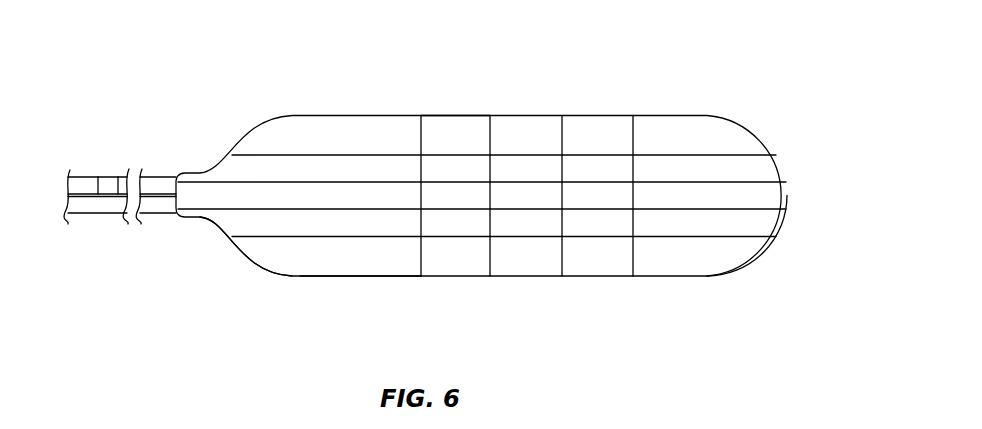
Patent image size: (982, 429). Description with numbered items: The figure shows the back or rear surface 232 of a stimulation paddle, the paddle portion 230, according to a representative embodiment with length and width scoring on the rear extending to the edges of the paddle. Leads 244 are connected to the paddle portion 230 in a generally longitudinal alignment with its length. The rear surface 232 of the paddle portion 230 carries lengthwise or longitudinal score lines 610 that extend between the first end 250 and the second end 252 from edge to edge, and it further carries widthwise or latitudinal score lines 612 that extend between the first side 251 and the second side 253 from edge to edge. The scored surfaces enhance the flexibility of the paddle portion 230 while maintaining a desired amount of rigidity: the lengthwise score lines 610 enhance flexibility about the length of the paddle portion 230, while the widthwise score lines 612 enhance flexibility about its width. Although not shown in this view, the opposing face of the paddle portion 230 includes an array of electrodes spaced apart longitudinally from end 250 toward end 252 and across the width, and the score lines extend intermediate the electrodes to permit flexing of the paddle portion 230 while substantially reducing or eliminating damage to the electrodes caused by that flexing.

The paddle portion 230 is at (447, 190).
The rear surface 232 is at (270, 136).
The leads 244 is at (84, 173).
The end 250 is at (733, 309).
The side 251 is at (362, 277).
The end 252 is at (208, 276).
The side 253 is at (457, 116).
The longitudinal score lines 610 is at (760, 155).
The connecting traces 612 is at (421, 264).